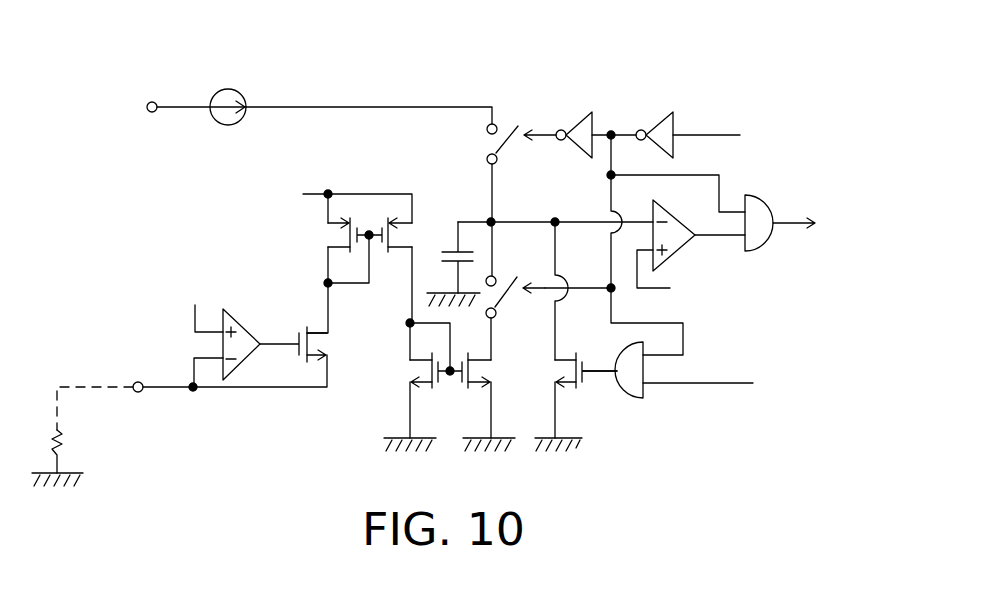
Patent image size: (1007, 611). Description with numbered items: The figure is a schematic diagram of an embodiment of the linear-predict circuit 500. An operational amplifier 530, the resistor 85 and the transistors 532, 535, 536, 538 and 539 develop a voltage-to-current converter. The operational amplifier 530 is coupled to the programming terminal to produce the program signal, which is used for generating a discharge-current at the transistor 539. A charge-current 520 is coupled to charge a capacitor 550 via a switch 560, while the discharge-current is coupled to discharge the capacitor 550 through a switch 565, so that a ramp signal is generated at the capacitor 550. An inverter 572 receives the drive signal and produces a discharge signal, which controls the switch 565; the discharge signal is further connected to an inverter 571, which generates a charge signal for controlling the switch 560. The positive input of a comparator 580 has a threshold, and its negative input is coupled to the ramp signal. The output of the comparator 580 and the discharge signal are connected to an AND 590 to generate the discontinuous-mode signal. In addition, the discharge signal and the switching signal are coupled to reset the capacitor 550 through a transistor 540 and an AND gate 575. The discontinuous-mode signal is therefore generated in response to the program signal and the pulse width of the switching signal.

The linear-predict circuit 500 is at (787, 49).
The charge-current 520 is at (228, 89).
The switch 560 is at (504, 122).
The inverter 571 is at (582, 116).
The inverter 572 is at (656, 116).
The capacitor 550 is at (449, 242).
The switch 565 is at (515, 277).
The transistor 540 is at (556, 372).
The transistor 539 is at (492, 376).
The transistor 538 is at (431, 390).
The transistor 535 is at (328, 236).
The transistor 536 is at (390, 250).
The operational amplifier 530 is at (252, 333).
The transistor 532 is at (316, 348).
The comparator 580 is at (678, 242).
The AND 590 is at (760, 238).
The AND gate 575 is at (635, 388).
The resistor 85 is at (61, 456).